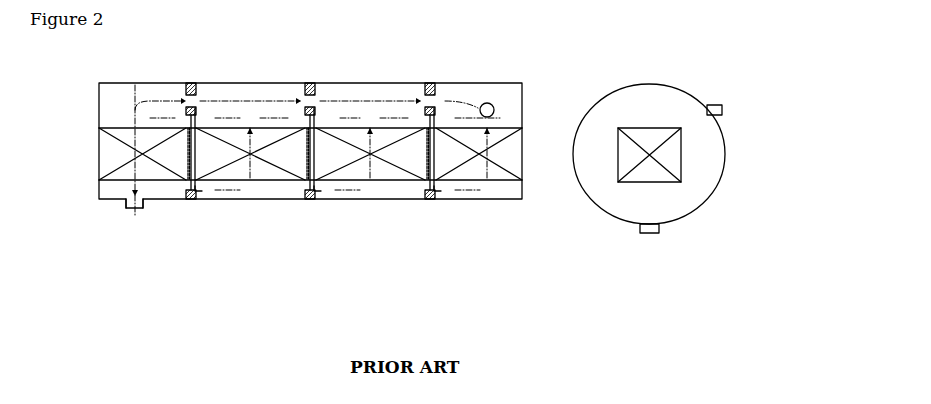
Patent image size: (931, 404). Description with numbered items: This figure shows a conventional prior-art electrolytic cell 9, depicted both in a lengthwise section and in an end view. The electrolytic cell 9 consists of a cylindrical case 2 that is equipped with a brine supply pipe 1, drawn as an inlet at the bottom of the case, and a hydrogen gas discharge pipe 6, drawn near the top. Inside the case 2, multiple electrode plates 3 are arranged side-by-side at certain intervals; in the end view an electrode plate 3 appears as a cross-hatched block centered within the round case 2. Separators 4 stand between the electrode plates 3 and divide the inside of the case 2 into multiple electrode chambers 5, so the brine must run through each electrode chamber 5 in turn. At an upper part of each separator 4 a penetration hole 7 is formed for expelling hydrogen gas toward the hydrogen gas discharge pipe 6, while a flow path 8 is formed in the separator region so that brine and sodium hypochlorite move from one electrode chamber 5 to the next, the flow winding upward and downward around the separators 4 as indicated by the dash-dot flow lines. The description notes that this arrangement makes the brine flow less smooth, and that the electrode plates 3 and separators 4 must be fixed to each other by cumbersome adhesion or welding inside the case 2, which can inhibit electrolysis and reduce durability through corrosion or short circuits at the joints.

The brine supply pipe 1 is at (144, 205).
The cylindrical case 2 is at (489, 200).
The electrode plate 3 is at (103, 155).
The separator 4 is at (196, 111).
The electrode chamber 5 is at (275, 190).
The hydrogen gas discharge pipe 6 is at (489, 103).
The penetration hole 7 is at (312, 103).
The flow path 8 is at (320, 186).
The electrolytic cell 9 is at (703, 240).